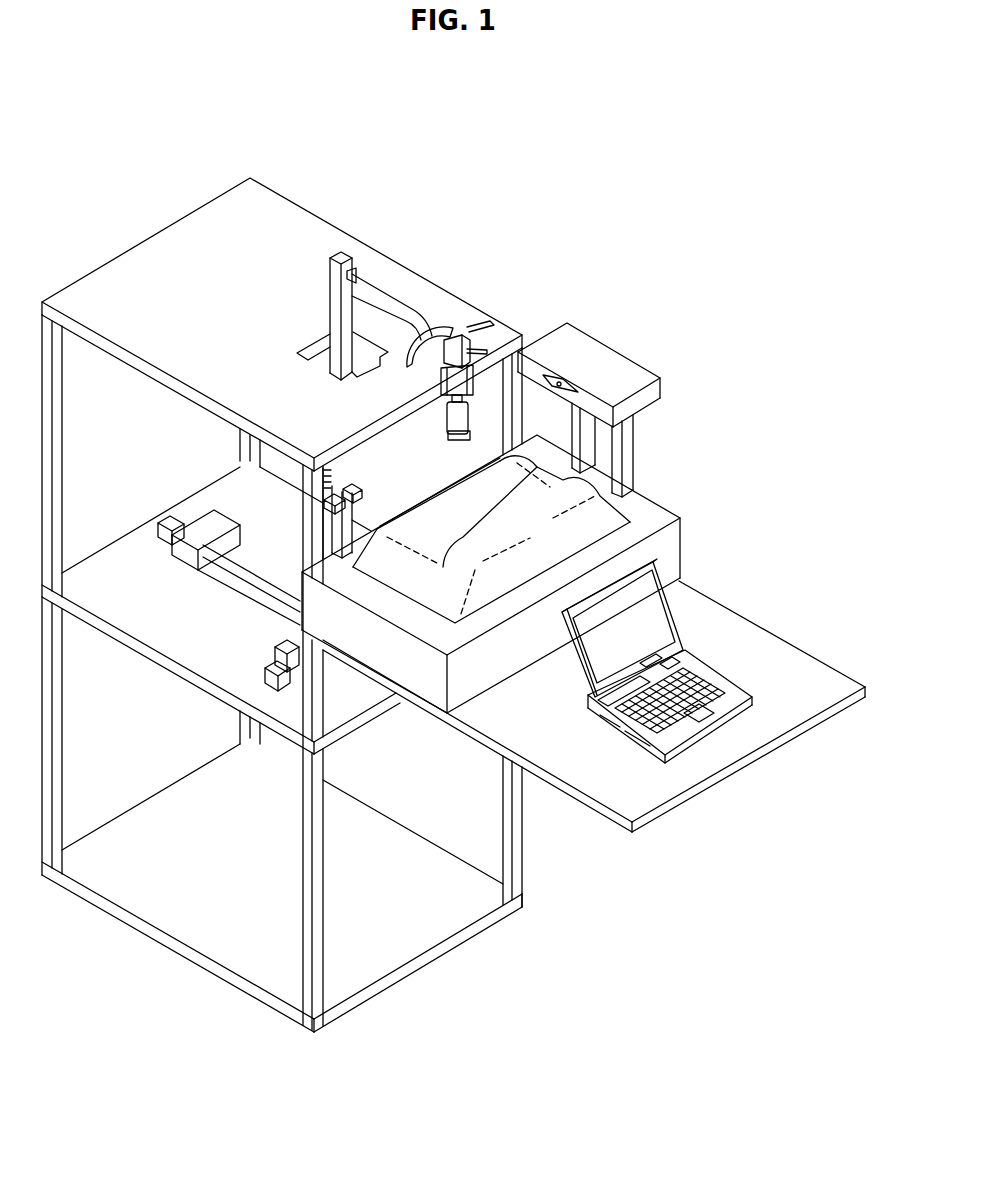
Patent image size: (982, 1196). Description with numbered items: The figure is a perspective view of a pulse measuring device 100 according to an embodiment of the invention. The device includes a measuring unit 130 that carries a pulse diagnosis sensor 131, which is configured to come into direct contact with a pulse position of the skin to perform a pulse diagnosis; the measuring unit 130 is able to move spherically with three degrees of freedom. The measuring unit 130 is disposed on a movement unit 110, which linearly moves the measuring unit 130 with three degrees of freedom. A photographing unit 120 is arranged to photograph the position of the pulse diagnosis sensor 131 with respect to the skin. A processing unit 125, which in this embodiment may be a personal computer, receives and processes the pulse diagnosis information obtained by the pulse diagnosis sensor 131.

The pulse measuring device 100 is at (482, 106).
The movement unit 110 is at (222, 590).
The photographing unit 120 is at (668, 380).
The processing unit 125 is at (686, 627).
The measuring unit 130 is at (500, 338).
The pulse diagnosis sensor 131 is at (457, 438).